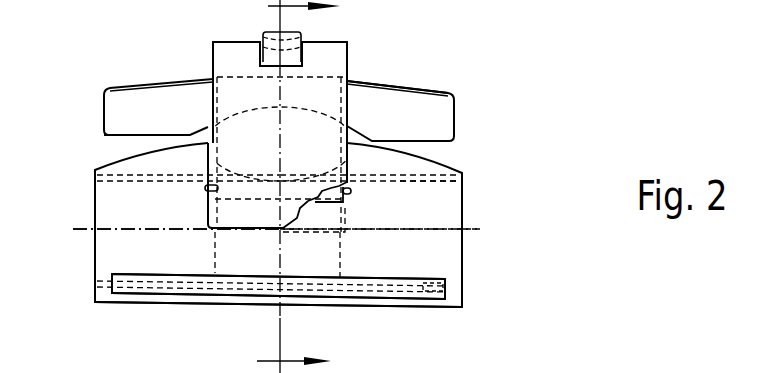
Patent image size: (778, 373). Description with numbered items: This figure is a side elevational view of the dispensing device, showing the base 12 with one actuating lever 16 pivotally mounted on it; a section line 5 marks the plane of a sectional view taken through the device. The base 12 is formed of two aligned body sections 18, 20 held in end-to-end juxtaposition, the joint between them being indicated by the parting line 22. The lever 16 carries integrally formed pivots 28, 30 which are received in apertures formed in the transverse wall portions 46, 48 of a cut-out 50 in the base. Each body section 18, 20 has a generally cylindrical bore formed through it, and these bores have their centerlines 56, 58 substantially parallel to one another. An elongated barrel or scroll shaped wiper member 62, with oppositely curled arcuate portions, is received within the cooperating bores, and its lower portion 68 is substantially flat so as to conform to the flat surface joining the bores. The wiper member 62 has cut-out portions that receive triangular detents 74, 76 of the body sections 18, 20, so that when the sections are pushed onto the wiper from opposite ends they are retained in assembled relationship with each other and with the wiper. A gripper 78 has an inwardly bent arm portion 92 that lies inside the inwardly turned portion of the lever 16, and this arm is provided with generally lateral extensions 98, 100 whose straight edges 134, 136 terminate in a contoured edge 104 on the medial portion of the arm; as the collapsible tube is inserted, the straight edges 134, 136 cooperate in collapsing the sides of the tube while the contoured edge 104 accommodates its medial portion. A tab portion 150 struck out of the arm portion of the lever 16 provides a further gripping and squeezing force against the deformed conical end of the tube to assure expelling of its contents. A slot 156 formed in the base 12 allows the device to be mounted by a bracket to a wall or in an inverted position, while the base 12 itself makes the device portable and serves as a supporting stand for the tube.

The section line 5- 5 is at (319, 186).
The base 12 is at (90, 272).
The actuating lever 16 is at (349, 62).
The body section 18 is at (93, 245).
The body section 20 is at (462, 257).
The parting line 22 is at (268, 262).
The pivot 28 is at (190, 171).
The pivot 30 is at (360, 175).
The transverse wall portion 46 is at (205, 189).
The transverse wall portion 48 is at (349, 193).
The cut-out 50 is at (323, 212).
The centerline 56 is at (462, 236).
The centerline 58 is at (462, 233).
The wiper member 62 is at (425, 187).
The lower portion of wiper 68 is at (465, 278).
The detent 74 is at (168, 280).
The detent 76 is at (400, 283).
The gripper 78 is at (455, 115).
The inwardly bent arm portion 92 is at (420, 78).
The lateral extension 98 is at (103, 100).
The lateral extension 100 is at (452, 90).
The contoured edge 104 is at (352, 108).
The straight edge 134 is at (104, 137).
The straight edge 136 is at (445, 149).
The tab portion 150 is at (302, 38).
The slot 156 is at (410, 298).